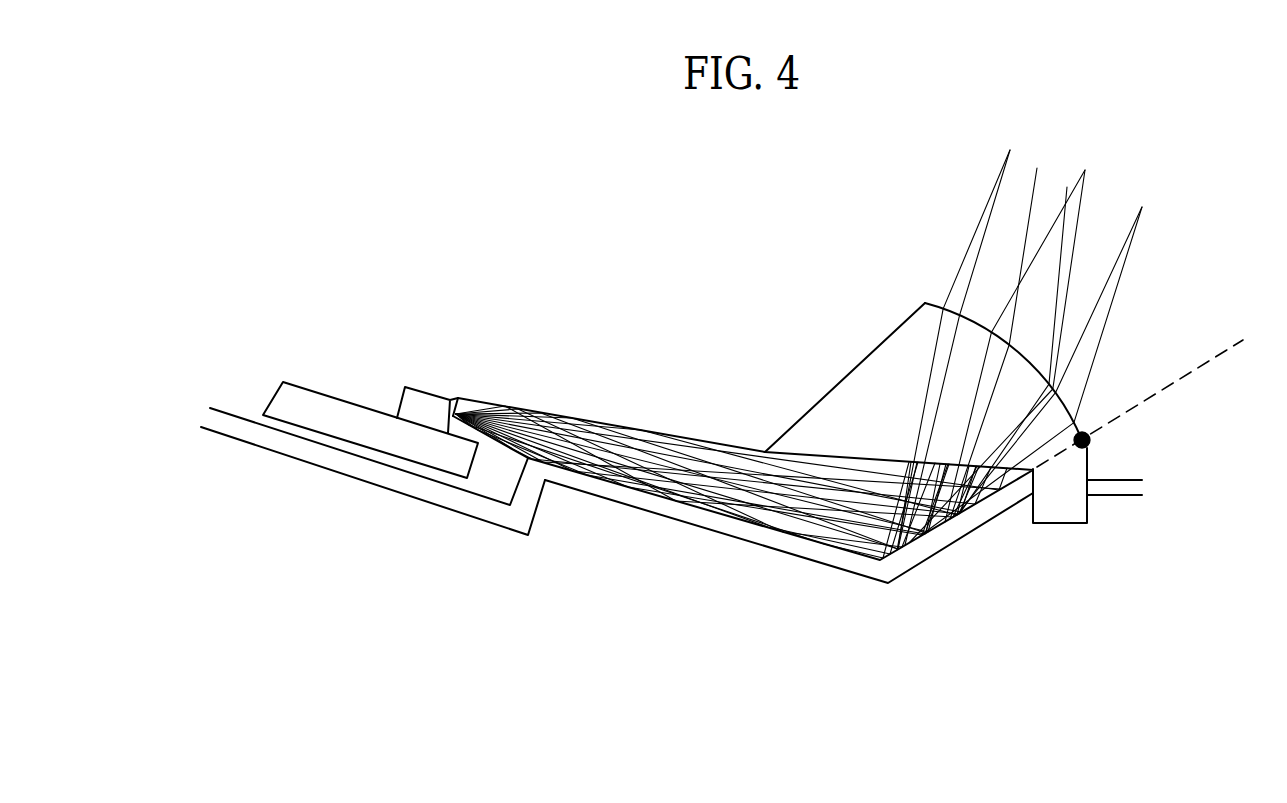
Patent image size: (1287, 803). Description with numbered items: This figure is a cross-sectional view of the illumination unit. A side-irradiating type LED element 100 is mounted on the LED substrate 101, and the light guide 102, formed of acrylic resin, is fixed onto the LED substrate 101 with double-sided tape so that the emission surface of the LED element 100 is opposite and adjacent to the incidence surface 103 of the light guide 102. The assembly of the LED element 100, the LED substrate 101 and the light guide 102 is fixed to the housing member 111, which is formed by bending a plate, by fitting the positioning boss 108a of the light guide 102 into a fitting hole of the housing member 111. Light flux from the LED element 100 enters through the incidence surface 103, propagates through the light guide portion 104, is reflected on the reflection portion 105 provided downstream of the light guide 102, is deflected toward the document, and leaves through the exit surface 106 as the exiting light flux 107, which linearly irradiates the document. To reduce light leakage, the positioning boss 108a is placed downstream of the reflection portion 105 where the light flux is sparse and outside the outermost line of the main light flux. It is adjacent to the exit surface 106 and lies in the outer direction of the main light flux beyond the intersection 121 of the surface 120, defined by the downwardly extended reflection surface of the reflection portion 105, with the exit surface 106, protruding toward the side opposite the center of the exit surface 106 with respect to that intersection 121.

The LED element 100 is at (410, 391).
The LED substrate 101 is at (315, 397).
The light guide 102 is at (850, 380).
The incidence surface 103 is at (448, 409).
The light guide portion 104 is at (652, 446).
The reflection portion 105 is at (948, 548).
The exit surface 106 is at (1020, 346).
The exiting light flux 107 is at (977, 220).
The positioning boss 108a is at (1062, 525).
The housing member 111 is at (407, 495).
The surface defined by the reflection surface 120 is at (1223, 353).
The intersection 121 is at (1091, 444).